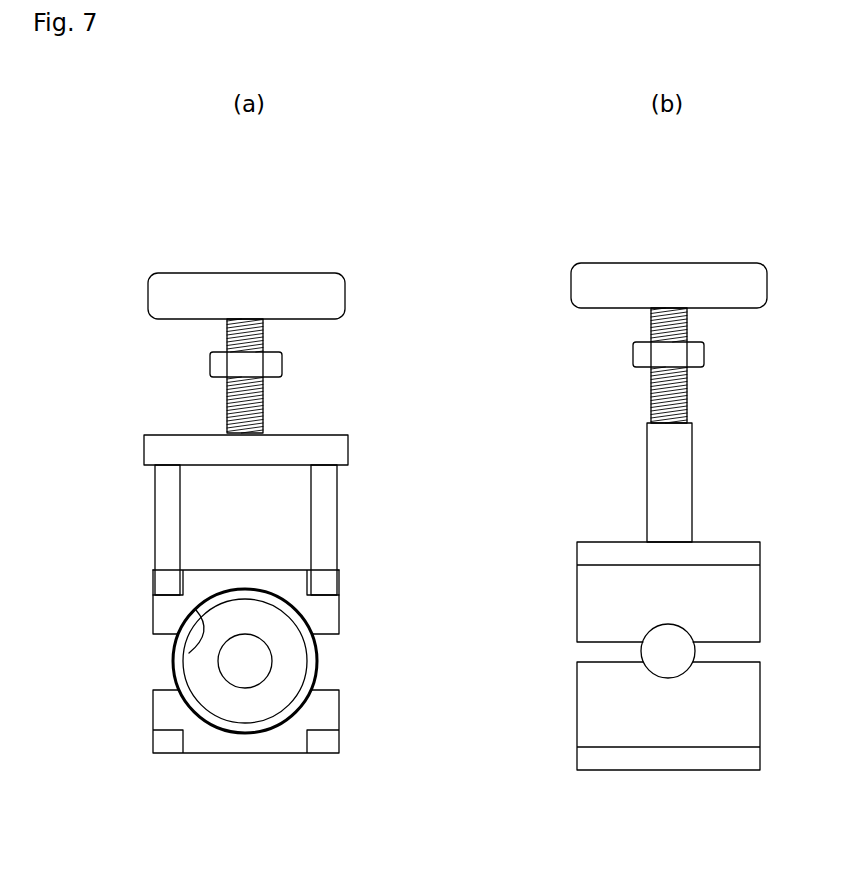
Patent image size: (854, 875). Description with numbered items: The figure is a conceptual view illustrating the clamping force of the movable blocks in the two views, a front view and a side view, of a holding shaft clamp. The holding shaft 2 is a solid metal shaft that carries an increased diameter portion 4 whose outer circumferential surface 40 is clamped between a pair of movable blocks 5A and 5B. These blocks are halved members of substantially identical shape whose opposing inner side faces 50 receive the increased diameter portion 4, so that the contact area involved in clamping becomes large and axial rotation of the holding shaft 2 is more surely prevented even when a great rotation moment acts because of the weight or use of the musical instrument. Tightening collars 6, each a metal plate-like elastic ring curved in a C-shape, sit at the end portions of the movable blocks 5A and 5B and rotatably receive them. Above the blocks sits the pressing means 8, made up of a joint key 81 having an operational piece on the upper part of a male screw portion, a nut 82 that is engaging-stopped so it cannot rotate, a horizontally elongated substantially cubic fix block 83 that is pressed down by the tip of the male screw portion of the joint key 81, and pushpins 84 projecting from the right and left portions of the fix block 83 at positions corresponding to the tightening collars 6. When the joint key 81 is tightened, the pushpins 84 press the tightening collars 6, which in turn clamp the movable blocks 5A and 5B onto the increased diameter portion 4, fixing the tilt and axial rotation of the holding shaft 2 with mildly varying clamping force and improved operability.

In FIG. 7A, the holding shaft 2 is at (234, 668).
In FIG. 7B, the holding shaft 2 is at (668, 652).
In FIG. 7A, the increased diameter portion 4 is at (266, 722).
In FIG. 7A, the outer circumferential surface 40 is at (319, 660).
In FIG. 7A, the inner side faces 50 is at (176, 652).
In FIG. 7A, the movable block 5A is at (330, 612).
In FIG. 7A, the movable block 5B is at (330, 713).
In FIG. 7A, the tightening collar 6 is at (160, 582).
In FIG. 7A, the pressing means 8 is at (236, 389).
In FIG. 7B, the pressing means 8 is at (676, 357).
In FIG. 7A, the joint key 81 is at (275, 281).
In FIG. 7B, the joint key 81 is at (698, 271).
In FIG. 7A, the nut 82 is at (283, 367).
In FIG. 7B, the nut 82 is at (705, 355).
In FIG. 7A, the fix block 83 is at (146, 454).
In FIG. 7A, the pushpins 84 is at (158, 493).